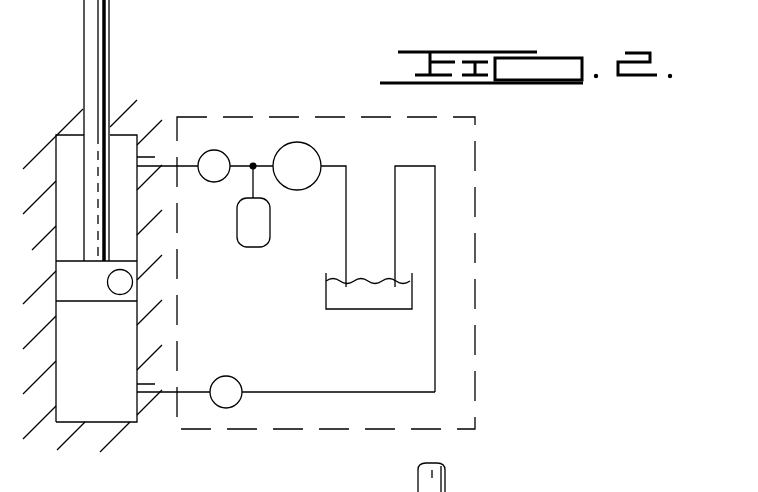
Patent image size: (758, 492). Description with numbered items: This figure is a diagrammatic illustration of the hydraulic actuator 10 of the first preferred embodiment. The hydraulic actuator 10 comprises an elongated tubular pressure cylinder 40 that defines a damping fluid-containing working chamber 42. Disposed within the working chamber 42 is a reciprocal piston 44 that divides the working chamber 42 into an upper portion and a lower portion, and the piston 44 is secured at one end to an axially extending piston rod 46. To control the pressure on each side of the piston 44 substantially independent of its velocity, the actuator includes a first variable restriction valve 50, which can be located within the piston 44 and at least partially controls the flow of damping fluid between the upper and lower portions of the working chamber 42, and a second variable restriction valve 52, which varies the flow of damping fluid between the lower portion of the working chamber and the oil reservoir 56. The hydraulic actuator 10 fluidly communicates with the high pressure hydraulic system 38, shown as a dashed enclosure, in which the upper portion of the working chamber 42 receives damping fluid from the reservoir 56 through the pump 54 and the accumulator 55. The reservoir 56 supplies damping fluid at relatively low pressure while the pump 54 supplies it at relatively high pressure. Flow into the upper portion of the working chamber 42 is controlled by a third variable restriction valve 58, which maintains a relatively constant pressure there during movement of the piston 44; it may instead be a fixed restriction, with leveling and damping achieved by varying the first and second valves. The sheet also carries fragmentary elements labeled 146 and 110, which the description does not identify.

The hydraulic actuator 10 is at (292, 58).
The high pressure hydraulic system 38 is at (478, 235).
The elongated tubular pressure cylinder 40 is at (85, 285).
The working chamber 42 is at (68, 165).
The piston 44 is at (84, 293).
The piston rod 46 is at (103, 14).
The first variable restriction valve 50 is at (128, 288).
The second variable restriction valve 52 is at (238, 378).
The pump 54 is at (312, 158).
The accumulator 55 is at (260, 224).
The reservoir 56 is at (360, 298).
The third variable restriction valve 58 is at (204, 151).
The container 146 is at (468, 491).
The assembly 110 is at (611, 491).